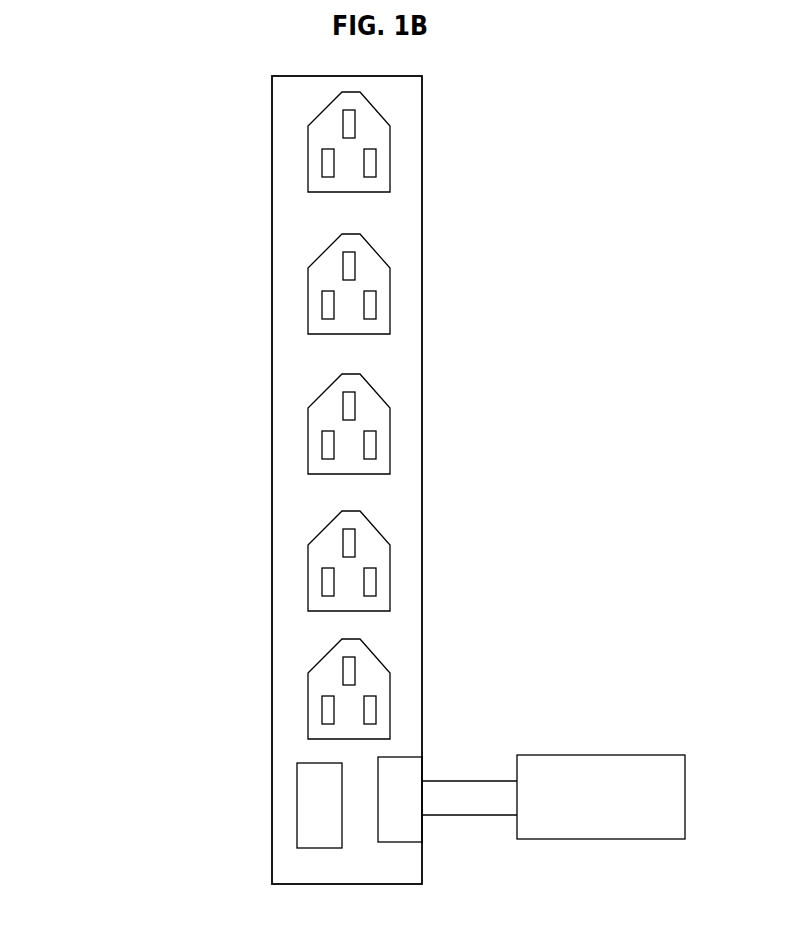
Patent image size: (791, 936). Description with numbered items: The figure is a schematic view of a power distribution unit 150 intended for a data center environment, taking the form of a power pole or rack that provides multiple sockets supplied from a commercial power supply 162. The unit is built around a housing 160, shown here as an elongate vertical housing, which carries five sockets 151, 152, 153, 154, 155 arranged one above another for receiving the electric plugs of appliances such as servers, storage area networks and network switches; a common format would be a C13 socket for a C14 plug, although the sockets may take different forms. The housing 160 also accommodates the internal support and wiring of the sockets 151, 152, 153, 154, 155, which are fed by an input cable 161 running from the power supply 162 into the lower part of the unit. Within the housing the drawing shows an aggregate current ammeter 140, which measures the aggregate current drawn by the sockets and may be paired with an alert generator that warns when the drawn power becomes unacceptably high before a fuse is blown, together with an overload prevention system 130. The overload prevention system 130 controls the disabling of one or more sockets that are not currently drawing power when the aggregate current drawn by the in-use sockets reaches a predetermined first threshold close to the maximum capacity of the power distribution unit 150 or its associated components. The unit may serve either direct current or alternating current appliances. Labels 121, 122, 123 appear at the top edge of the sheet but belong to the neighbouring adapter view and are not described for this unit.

The power distribution unit 150 is at (134, 137).
The housing 160 is at (423, 272).
The socket 151 is at (308, 167).
The socket 152 is at (308, 303).
The socket 153 is at (308, 442).
The socket 154 is at (308, 578).
The socket 155 is at (308, 705).
The overload prevention system 130 is at (297, 793).
The aggregate current ammeter 140 is at (422, 762).
The input cable 161 is at (480, 778).
The power supply 162 is at (595, 755).
The component of FIG. 1A 121 is at (767, 0).
The component of FIG. 1A 122 is at (565, 0).
The component of FIG. 1A 123 is at (695, 0).